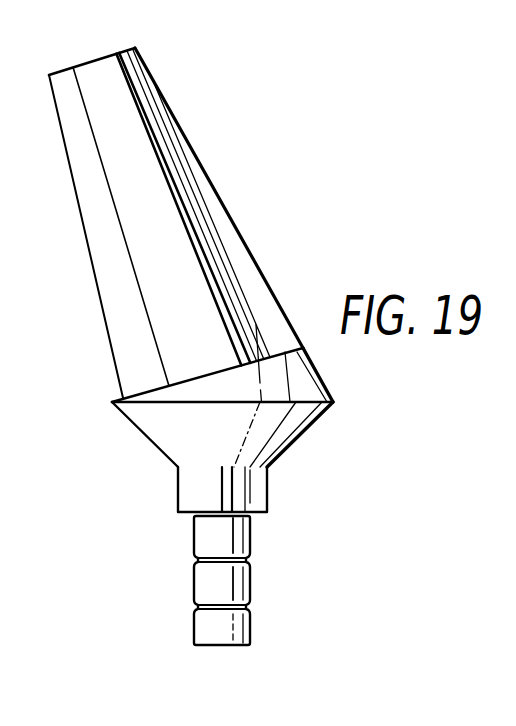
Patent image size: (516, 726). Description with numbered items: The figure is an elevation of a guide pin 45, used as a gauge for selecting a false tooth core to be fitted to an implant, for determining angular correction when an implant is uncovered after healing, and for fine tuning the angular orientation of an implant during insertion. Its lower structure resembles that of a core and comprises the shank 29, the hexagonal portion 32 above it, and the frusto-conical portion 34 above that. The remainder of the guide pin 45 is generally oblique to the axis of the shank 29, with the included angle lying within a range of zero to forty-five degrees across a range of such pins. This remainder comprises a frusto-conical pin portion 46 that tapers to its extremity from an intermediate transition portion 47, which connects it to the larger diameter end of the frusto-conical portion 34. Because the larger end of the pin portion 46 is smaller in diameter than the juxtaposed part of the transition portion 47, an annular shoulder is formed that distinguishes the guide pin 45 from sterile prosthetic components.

The shank 29 is at (223, 585).
The hexagonal portion 32 is at (202, 498).
The frusto-conical portion 34 is at (173, 435).
The guide pin 45 is at (286, 452).
The frusto-conical pin portion 46 is at (153, 218).
The intermediate transition portion 47 is at (282, 382).